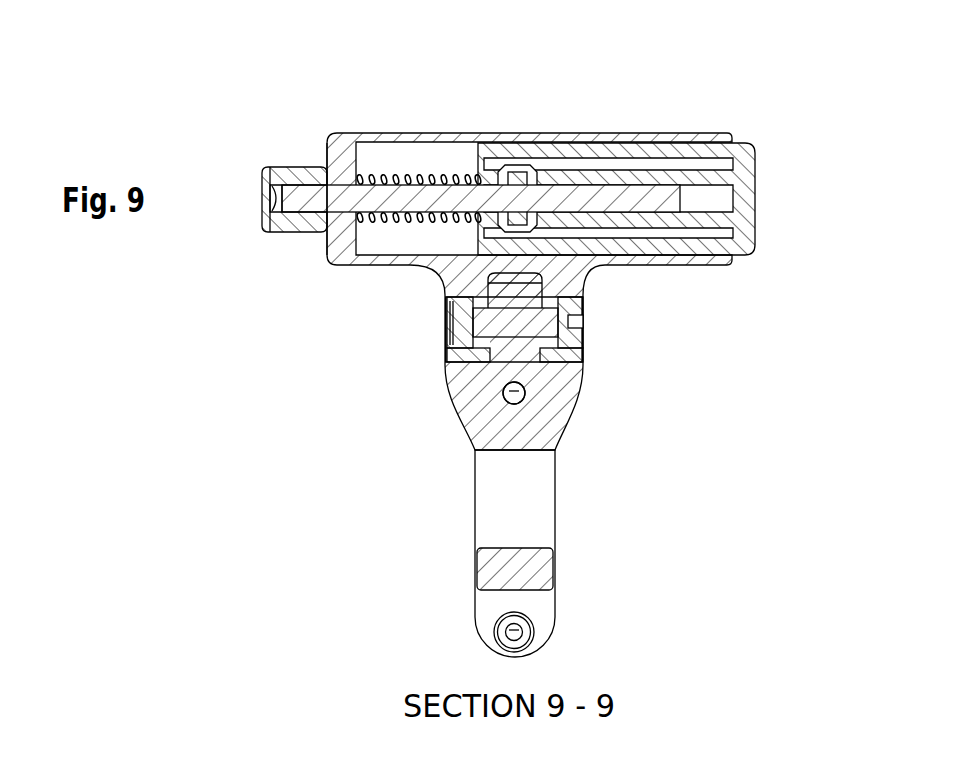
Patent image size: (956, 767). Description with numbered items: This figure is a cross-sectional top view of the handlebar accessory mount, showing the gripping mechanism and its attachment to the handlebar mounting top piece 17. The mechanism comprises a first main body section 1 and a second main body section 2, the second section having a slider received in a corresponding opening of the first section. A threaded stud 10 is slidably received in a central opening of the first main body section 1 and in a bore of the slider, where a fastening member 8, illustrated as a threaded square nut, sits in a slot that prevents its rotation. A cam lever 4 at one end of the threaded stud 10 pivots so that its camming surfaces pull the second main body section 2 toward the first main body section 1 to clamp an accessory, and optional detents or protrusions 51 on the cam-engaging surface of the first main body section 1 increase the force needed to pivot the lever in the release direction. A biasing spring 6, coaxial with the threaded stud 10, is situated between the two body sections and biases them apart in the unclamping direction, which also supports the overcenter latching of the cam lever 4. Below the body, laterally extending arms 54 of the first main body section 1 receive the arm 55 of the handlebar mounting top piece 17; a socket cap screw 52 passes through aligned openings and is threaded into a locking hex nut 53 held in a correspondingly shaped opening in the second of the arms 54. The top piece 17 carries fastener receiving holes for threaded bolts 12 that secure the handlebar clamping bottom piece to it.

The first main body section 1 is at (385, 134).
The second main body section 2 is at (750, 160).
The cam lever 4 is at (300, 176).
The biasing spring 6 is at (440, 178).
The fastening member 8 is at (527, 177).
The threaded stud 10 is at (645, 202).
The threaded bolts 12 is at (505, 393).
The handlebar mounting top piece 17 is at (536, 620).
The detents or protrusions 51 is at (333, 252).
The socket cap screw 52 is at (572, 331).
The locking hex nut 53 is at (447, 312).
The laterally extending arms 54 is at (447, 285).
The arm 55 is at (515, 348).